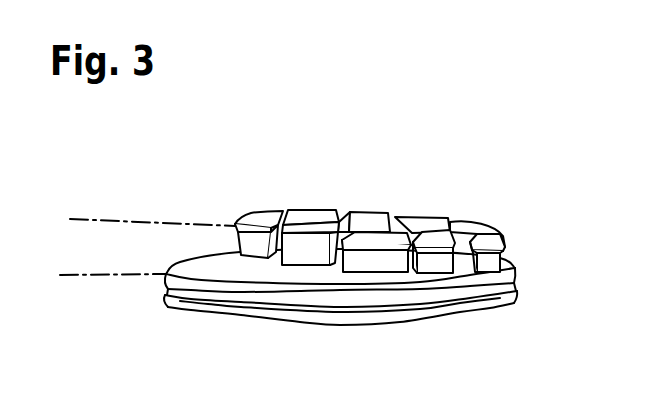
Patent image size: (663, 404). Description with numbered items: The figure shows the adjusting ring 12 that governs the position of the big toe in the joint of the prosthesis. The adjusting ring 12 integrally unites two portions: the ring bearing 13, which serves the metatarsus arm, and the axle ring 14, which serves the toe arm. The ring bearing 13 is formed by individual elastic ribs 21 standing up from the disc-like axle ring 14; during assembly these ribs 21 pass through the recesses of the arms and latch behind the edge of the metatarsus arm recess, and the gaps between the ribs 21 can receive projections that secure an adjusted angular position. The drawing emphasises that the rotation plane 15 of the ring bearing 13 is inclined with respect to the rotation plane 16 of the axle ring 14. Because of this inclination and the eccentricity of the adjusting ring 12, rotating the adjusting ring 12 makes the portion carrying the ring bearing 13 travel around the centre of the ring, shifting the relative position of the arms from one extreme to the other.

The adjusting ring 12 is at (420, 200).
The ring bearing 13 is at (506, 261).
The axle ring 14 is at (515, 284).
The rotation plane of the ring bearing 15 is at (73, 220).
The rotation plane of the axle ring 16 is at (78, 275).
The ribs 21 is at (358, 212).